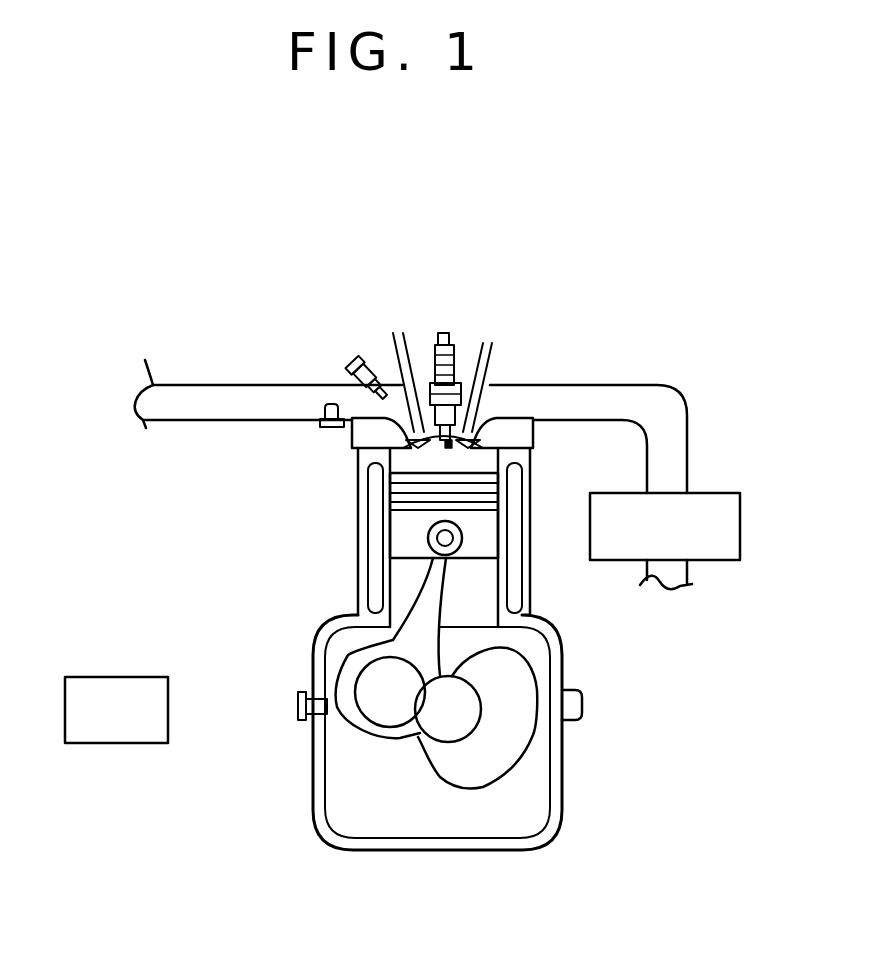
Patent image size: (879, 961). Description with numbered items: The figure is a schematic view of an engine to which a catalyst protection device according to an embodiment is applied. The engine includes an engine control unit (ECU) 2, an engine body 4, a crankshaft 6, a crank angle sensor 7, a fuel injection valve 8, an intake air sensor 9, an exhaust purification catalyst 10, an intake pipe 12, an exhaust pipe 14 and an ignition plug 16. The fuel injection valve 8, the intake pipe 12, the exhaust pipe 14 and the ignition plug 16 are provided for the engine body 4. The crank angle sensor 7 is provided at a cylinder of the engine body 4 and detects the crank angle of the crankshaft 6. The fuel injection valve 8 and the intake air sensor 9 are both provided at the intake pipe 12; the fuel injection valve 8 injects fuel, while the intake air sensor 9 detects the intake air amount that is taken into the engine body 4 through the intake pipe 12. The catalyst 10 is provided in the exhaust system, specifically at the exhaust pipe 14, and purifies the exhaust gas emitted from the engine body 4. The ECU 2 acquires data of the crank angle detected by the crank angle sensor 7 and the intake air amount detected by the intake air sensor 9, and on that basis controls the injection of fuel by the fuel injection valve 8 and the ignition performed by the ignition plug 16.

The engine control unit (ECU) 2 is at (70, 745).
The engine body 4 is at (606, 675).
The crankshaft 6 is at (377, 663).
The crank angle sensor 7 is at (170, 707).
The fuel injection valve 8 is at (42, 703).
The intake air sensor 9 is at (115, 676).
The exhaust purification catalyst 10 is at (740, 527).
The intake pipe 12 is at (185, 421).
The exhaust pipe 14 is at (598, 422).
The ignition plug 16 is at (65, 718).